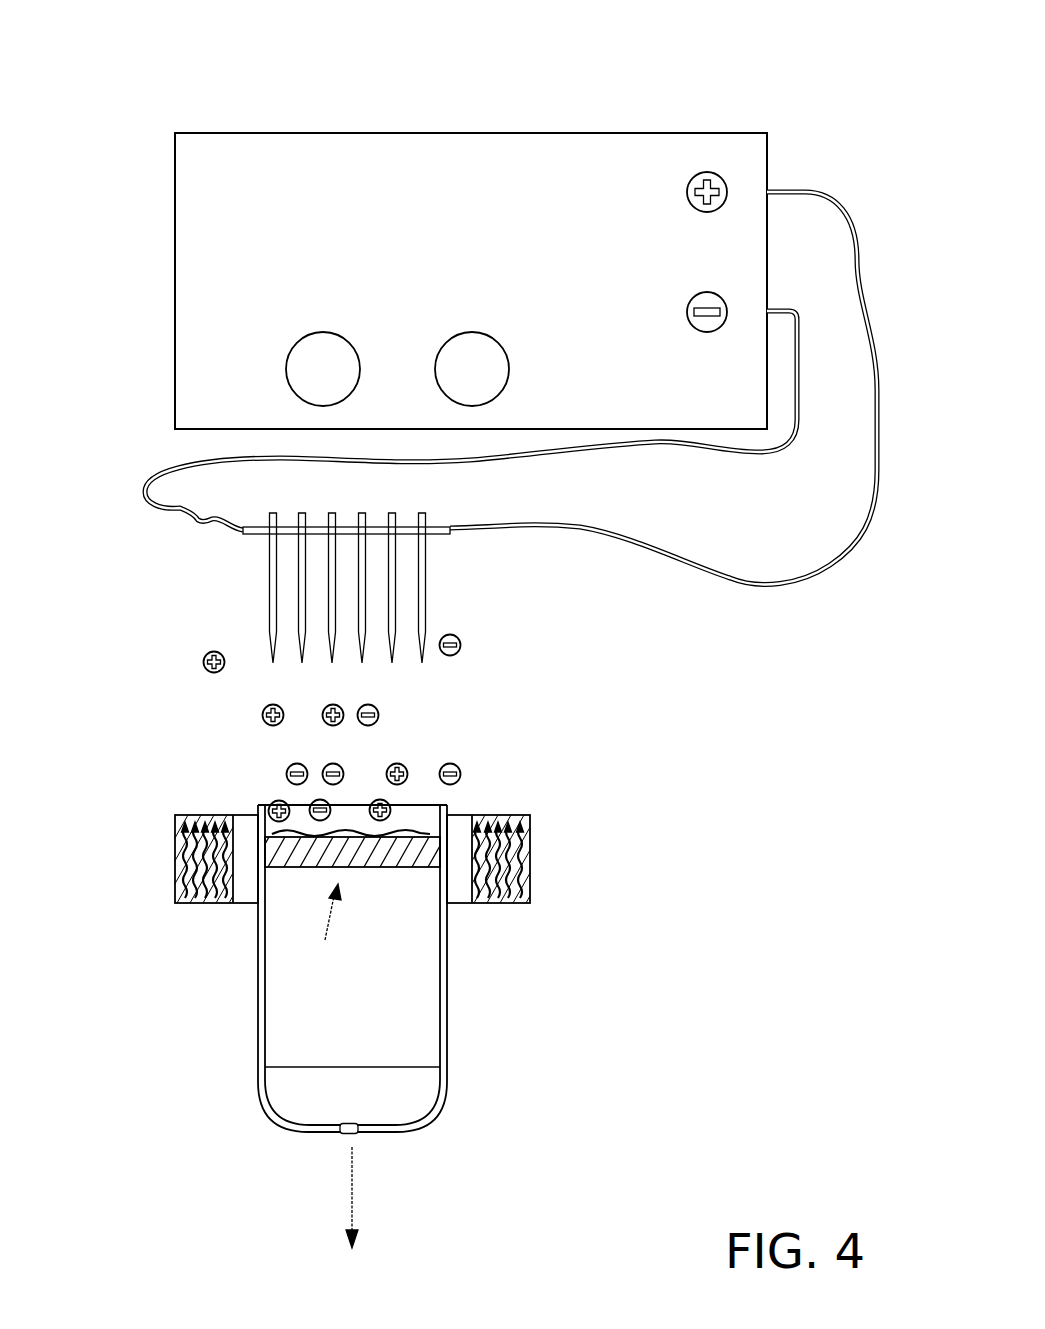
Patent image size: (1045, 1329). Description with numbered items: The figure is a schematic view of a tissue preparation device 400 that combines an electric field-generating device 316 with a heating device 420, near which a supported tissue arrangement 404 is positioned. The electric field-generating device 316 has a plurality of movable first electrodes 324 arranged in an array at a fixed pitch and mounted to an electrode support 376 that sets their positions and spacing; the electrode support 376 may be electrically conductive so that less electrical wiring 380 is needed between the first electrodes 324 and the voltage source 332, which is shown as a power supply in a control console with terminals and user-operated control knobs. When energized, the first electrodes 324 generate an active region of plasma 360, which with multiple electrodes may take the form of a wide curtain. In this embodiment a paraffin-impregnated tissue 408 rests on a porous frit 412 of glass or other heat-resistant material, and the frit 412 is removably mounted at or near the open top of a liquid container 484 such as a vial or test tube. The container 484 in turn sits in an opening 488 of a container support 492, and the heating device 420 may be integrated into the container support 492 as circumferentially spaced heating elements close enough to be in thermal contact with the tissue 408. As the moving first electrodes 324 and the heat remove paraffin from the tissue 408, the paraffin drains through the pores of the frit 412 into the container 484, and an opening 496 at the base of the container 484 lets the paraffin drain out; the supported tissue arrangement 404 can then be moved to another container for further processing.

The tissue preparation device 400 is at (102, 127).
The voltage source 332 is at (558, 133).
The electric field-generating device 316 is at (399, 232).
The electrical wiring 380 is at (152, 472).
The electrode support 376 is at (440, 535).
The first electrodes 324 is at (268, 610).
The plasma 360 is at (186, 735).
The heating device 420 is at (160, 865).
The opening 488 is at (465, 812).
The container support 492 is at (531, 836).
The porous frit 412 is at (400, 866).
The paraffin-impregnated tissue 408 is at (408, 830).
The supported tissue arrangement 404 is at (325, 940).
The liquid container 484 is at (447, 1025).
The opening 496 is at (355, 1135).